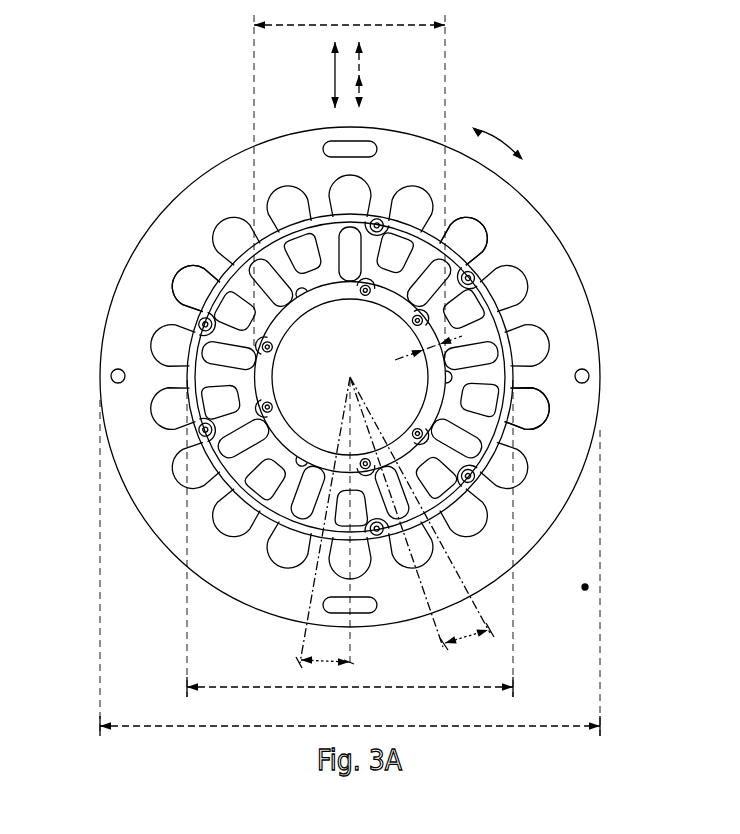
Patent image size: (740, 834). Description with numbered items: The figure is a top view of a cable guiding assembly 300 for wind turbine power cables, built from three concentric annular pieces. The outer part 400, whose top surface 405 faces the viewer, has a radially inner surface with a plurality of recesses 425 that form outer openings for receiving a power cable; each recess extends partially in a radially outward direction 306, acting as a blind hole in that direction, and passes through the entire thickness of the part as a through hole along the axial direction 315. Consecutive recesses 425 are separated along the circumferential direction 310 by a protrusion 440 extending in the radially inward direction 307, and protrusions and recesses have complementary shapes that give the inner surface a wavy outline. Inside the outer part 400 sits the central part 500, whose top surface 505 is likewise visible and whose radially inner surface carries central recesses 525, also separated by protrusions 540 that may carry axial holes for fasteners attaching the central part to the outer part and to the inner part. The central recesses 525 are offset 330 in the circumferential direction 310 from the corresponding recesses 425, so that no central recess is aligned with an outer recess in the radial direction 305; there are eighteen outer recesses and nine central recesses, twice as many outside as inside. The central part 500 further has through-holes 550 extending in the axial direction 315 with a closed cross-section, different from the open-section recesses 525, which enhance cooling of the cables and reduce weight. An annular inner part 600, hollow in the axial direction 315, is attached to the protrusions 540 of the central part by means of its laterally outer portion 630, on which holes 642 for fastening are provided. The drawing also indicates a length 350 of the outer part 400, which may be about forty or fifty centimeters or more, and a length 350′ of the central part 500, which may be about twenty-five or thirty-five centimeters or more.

The cable guiding assembly 300 is at (560, 156).
The radial direction 305 is at (335, 72).
The radially outward direction 306 is at (359, 55).
The radially inward direction 307 is at (359, 85).
The circumferential direction 310 is at (500, 138).
The axial direction 315 is at (590, 590).
The offset 330 is at (318, 660).
The length of the outer part 350 is at (172, 722).
The length of the central part 350′ is at (250, 680).
The outer part 400 is at (247, 203).
The top surface 405 is at (547, 267).
The recesses 425 is at (533, 410).
The protrusion 440 is at (485, 262).
The central part 500 is at (497, 377).
The top surface 505 is at (202, 373).
The central recesses 525 is at (217, 280).
The protrusion 540 is at (283, 467).
The through-holes 550 is at (232, 413).
The inner part 600 is at (265, 448).
The laterally outer portion 630 is at (200, 338).
The holes 642 is at (423, 457).